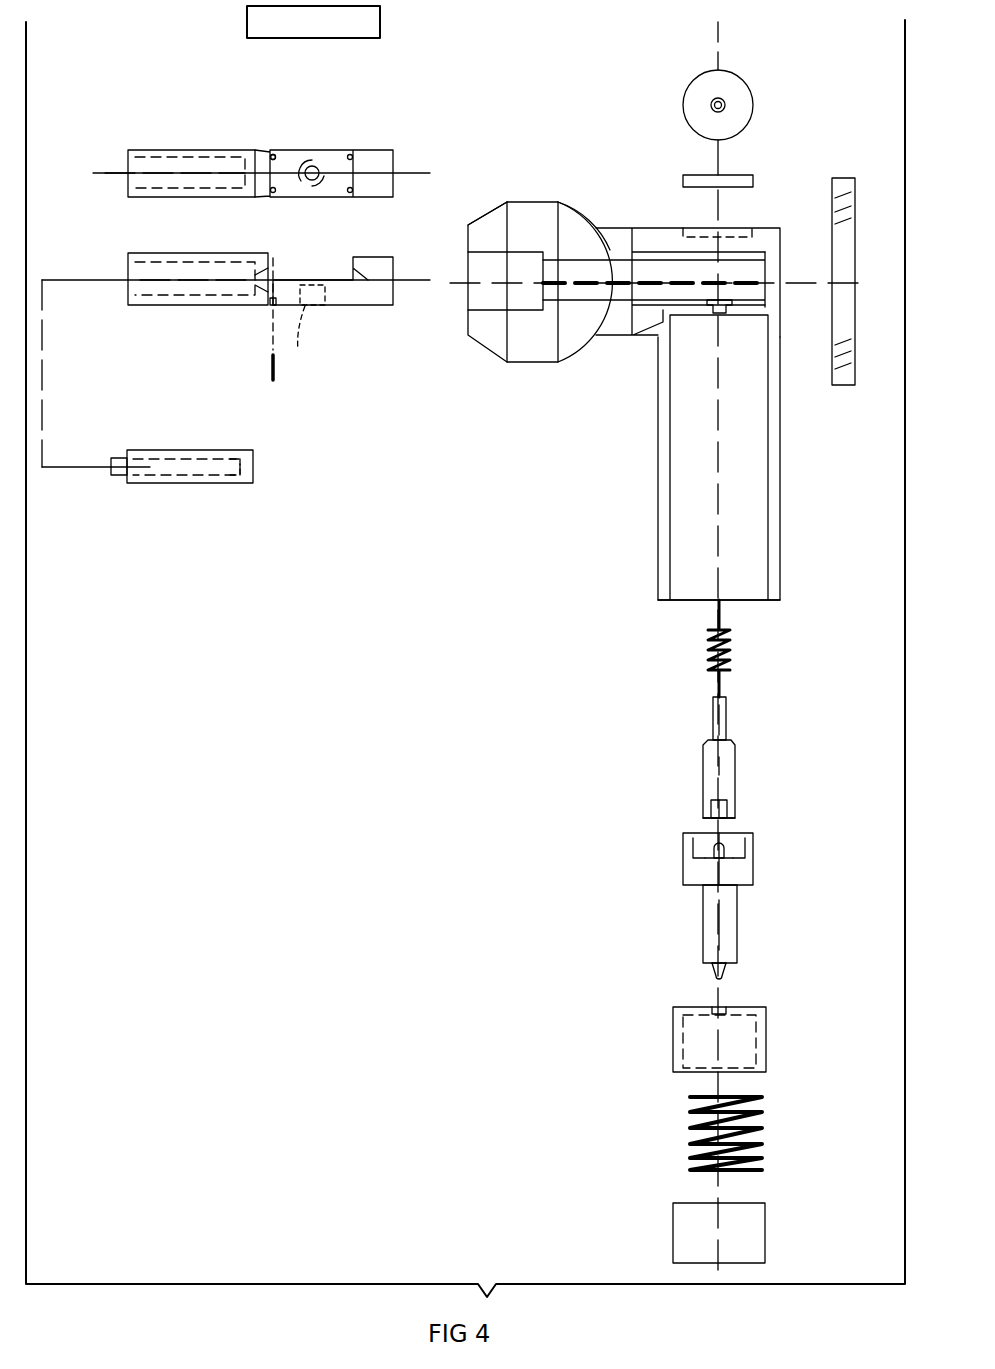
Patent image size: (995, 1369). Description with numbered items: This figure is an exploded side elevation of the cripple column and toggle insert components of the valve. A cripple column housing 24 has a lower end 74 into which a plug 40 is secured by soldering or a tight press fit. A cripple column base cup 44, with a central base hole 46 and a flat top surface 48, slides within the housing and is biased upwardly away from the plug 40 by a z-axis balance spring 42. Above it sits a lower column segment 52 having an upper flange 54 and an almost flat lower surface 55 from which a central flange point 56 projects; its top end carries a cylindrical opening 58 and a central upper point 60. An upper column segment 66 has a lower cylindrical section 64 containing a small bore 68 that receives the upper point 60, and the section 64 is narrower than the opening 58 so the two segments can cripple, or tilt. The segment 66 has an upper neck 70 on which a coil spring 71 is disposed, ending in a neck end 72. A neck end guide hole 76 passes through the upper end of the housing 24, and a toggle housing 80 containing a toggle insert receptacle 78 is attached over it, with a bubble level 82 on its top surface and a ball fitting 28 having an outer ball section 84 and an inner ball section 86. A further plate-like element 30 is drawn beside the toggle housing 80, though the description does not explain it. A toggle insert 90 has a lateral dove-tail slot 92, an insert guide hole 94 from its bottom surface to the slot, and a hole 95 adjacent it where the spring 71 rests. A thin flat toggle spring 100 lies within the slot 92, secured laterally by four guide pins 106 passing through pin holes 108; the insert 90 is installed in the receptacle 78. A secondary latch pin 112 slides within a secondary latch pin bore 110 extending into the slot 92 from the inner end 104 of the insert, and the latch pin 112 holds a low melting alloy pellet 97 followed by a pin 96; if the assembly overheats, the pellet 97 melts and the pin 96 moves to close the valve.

The cripple column housing 24 is at (781, 542).
The ball fitting 28 is at (522, 202).
The plate 30 is at (845, 178).
The plug 40 is at (766, 1218).
The z-axis balance spring 42 is at (763, 1116).
The cripple column base cup 44 is at (767, 1053).
The central base hole 46 is at (730, 1007).
The flat top surface 48 is at (683, 1010).
The lower column segment 52 is at (738, 910).
The upper flange 54 is at (754, 878).
The lower surface 55 is at (727, 968).
The central flange point 56 is at (706, 976).
The cylindrical opening 58 is at (735, 855).
The central upper point 60 is at (728, 842).
The lower cylindrical section 64 is at (703, 818).
The upper column segment 66 is at (703, 770).
The small bore 68 is at (730, 805).
The upper neck 70 is at (727, 727).
The coil spring 71 is at (732, 640).
The neck end 72 is at (727, 698).
The lower end 74 is at (690, 602).
The neck end guide hole 76 is at (716, 313).
The toggle insert receptacle 78 is at (662, 272).
The toggle housing 80 is at (768, 228).
The bubble level 82 is at (742, 90).
The outer ball section 84 is at (568, 210).
The inner ball section 86 is at (482, 213).
The toggle insert 90 is at (190, 150).
The dove-tail slot 92 is at (345, 152).
The insert guide hole 94 is at (316, 160).
The hole 95 is at (297, 340).
The pin 96 is at (118, 477).
The low melting alloy pellet 97 is at (233, 470).
The toggle spring 100 is at (375, 33).
The inner end 104 is at (128, 156).
The guide pins 106 is at (278, 370).
The pin holes 108 is at (276, 150).
The secondary latch pin bore 110 is at (124, 270).
The secondary latch pin 112 is at (205, 484).